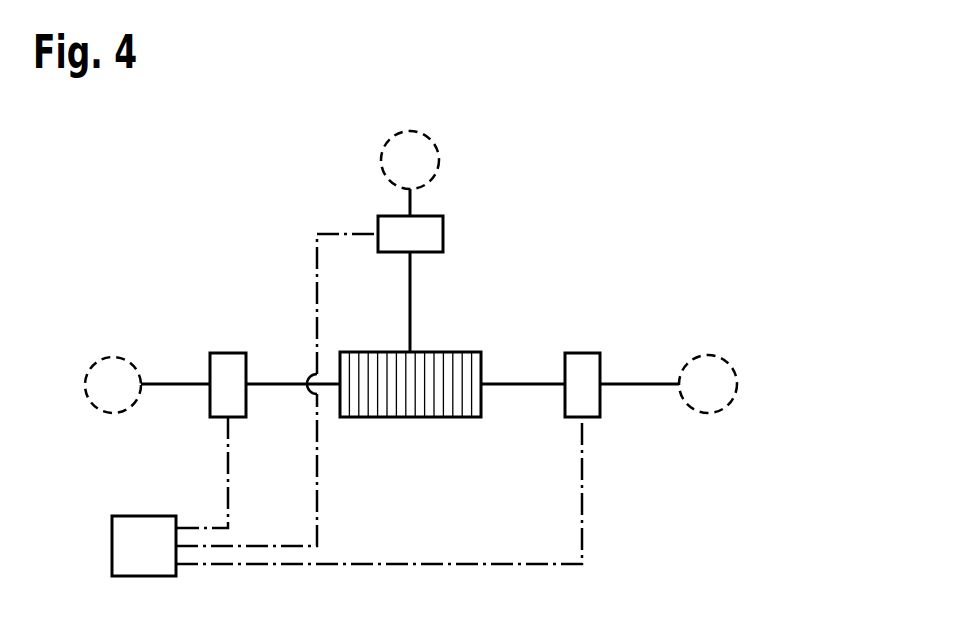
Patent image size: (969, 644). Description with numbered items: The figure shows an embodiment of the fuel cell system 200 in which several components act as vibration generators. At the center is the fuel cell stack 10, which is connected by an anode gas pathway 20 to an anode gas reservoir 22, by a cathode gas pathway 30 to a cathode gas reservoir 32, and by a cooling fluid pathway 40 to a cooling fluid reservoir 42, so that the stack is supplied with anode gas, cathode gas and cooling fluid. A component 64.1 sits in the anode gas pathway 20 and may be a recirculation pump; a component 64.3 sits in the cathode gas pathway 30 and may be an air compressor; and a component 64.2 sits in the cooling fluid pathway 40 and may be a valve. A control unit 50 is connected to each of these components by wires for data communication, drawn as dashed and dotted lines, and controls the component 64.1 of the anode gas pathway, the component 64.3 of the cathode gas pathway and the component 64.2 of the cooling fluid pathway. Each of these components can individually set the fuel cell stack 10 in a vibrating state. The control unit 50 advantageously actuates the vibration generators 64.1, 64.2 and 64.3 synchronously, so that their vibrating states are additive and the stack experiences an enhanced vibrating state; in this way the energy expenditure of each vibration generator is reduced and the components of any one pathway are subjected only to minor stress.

The fuel cell system 200 is at (665, 142).
The fuel cell stack 10 is at (372, 352).
The anode gas pathway 20 is at (175, 384).
The anode gas reservoir 22 is at (115, 357).
The cathode gas pathway 30 is at (518, 384).
The cathode gas reservoir 32 is at (708, 356).
The cooling fluid pathway 40 is at (410, 287).
The cooling fluid reservoir 42 is at (438, 153).
The control unit 50 is at (112, 543).
The component of the anode gas pathway 64.1 is at (228, 353).
The component of the cooling fluid pathway 64.2 is at (443, 230).
The component of the cathode gas pathway 64.3 is at (582, 353).